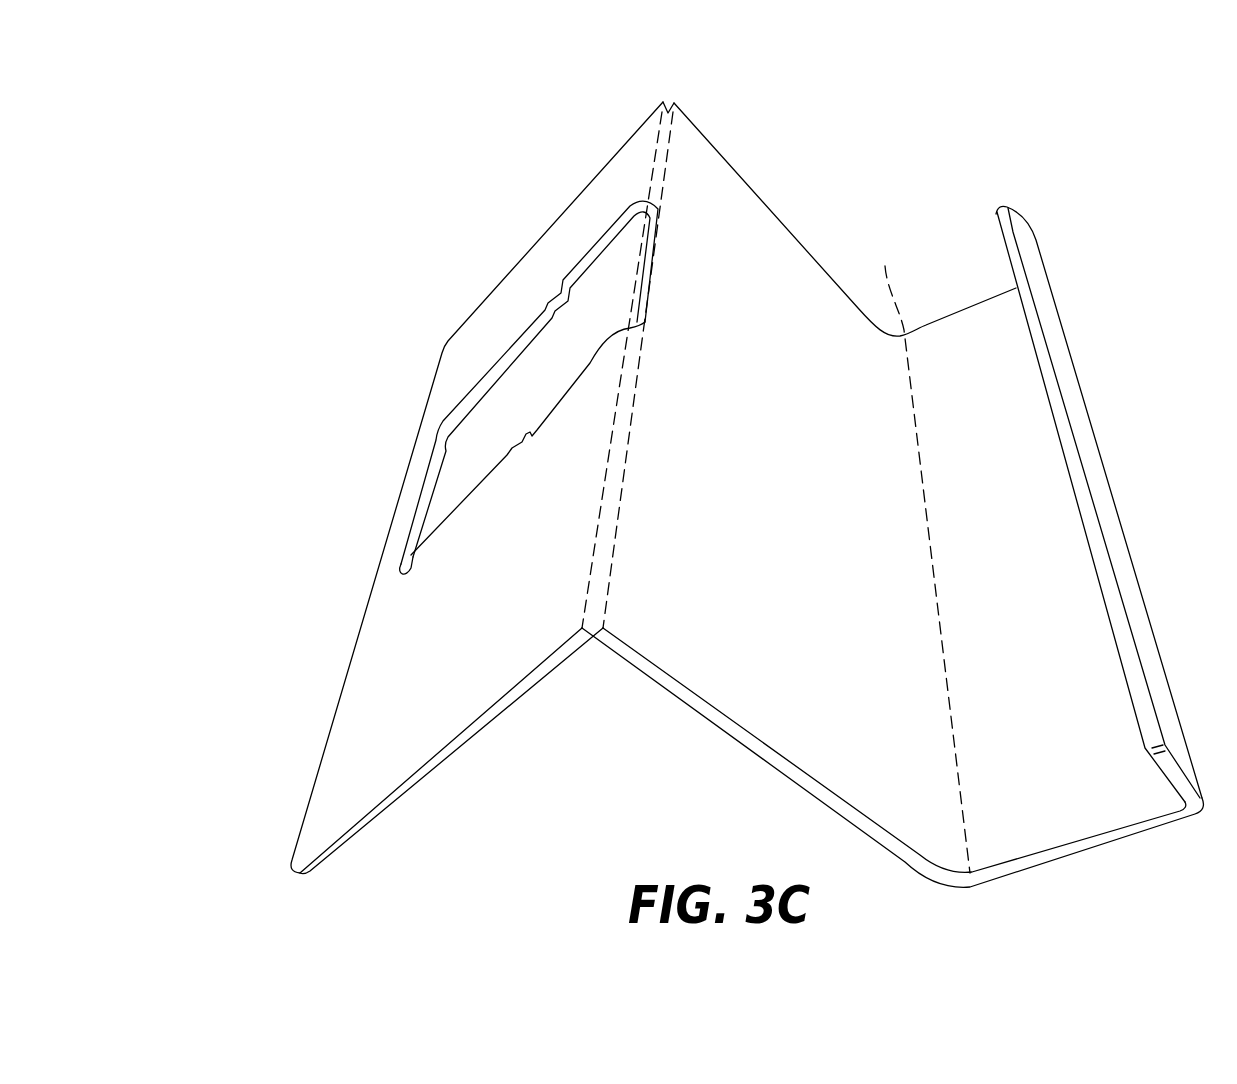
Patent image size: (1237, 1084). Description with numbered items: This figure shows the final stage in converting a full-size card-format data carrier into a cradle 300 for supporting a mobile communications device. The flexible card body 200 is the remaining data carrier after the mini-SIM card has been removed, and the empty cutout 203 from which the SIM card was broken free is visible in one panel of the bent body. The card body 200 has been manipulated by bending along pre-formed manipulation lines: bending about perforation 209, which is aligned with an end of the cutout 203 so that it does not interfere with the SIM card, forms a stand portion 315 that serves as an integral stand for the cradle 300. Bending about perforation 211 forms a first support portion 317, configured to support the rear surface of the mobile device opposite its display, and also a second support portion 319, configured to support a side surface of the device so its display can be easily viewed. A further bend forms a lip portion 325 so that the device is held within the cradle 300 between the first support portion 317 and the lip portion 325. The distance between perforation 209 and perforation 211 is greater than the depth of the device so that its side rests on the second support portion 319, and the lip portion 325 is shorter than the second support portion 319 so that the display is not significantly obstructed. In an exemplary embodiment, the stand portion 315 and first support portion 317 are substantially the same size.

The card body 200 is at (354, 172).
The cutout 203 is at (497, 356).
The perforation 209 is at (660, 106).
The perforation 211 is at (921, 556).
The cradle 300 is at (993, 127).
The stand portion 315 is at (337, 768).
The first support portion 317 is at (727, 164).
The second support portion 319 is at (1087, 810).
The lip portion 325 is at (1015, 232).